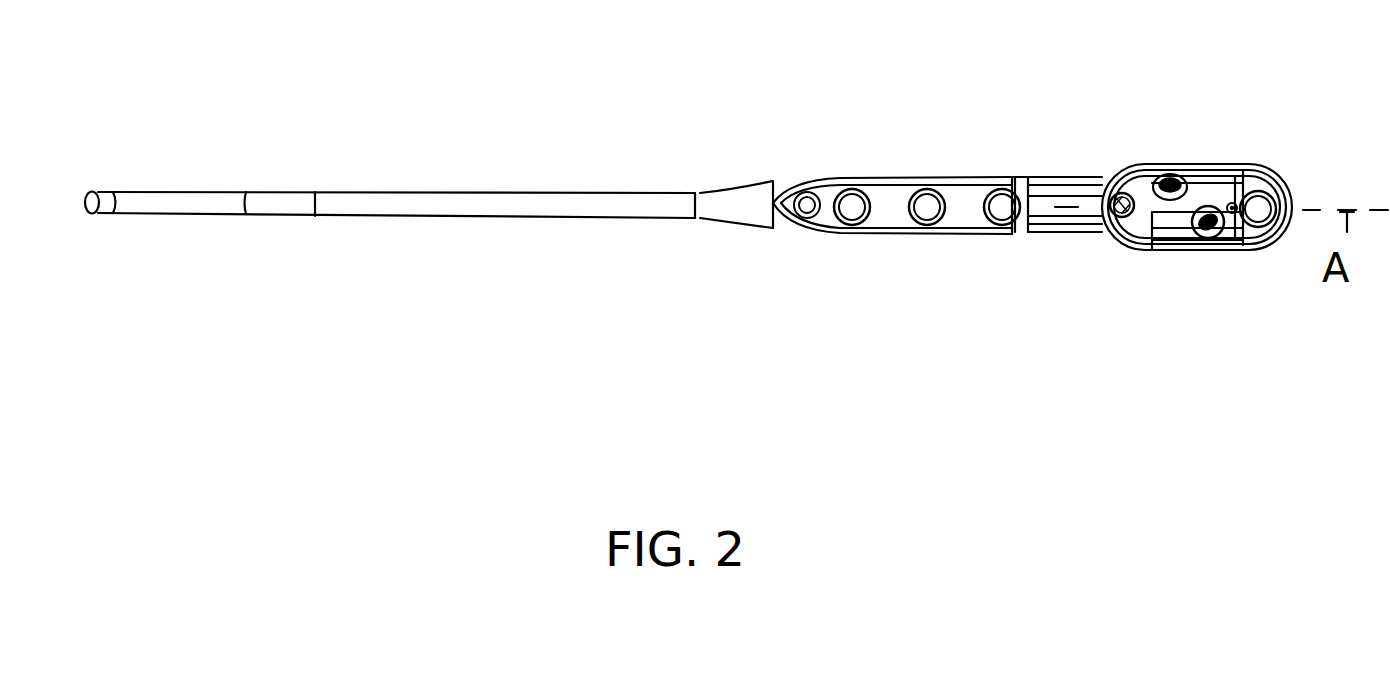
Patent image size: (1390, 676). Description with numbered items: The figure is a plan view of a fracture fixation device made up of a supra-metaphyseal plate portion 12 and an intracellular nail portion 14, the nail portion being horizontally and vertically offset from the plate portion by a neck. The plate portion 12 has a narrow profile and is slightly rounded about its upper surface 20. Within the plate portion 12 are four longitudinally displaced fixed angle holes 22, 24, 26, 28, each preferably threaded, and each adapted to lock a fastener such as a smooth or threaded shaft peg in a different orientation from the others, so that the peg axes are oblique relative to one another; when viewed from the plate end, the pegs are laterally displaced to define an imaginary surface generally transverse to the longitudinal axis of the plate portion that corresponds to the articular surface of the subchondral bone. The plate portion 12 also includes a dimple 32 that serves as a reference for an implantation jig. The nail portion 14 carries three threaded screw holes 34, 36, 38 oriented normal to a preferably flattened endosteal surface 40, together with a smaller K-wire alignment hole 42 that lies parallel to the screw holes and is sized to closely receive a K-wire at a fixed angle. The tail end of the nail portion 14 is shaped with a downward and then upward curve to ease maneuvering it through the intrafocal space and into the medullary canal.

The supra-metaphyseal plate portion 12 is at (723, 248).
The intracellular nail portion 14 is at (963, 178).
The upper surface 20 is at (1213, 178).
The fixed angle hole 22 is at (1283, 192).
The fixed angle hole 24 is at (1200, 238).
The fixed angle hole 26 is at (1163, 174).
The fixed angle hole 28 is at (1116, 214).
The dimple 32 is at (1237, 203).
The threaded screw hole 34 is at (996, 220).
The threaded screw hole 36 is at (918, 220).
The threaded screw hole 38 is at (849, 220).
The endosteal surface 40 is at (885, 198).
The K-wire alignment hole 42 is at (803, 213).